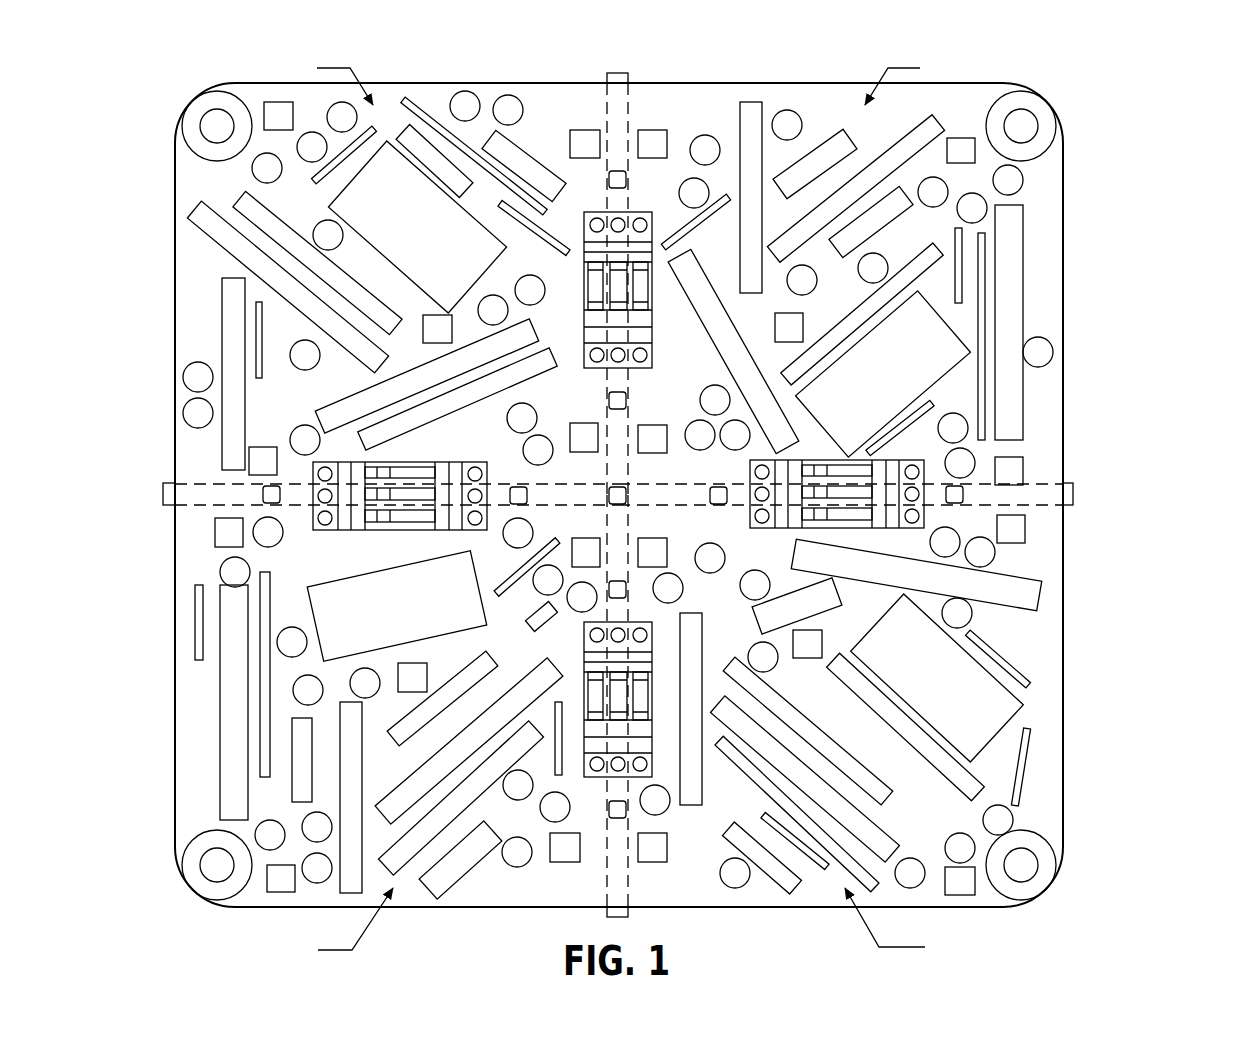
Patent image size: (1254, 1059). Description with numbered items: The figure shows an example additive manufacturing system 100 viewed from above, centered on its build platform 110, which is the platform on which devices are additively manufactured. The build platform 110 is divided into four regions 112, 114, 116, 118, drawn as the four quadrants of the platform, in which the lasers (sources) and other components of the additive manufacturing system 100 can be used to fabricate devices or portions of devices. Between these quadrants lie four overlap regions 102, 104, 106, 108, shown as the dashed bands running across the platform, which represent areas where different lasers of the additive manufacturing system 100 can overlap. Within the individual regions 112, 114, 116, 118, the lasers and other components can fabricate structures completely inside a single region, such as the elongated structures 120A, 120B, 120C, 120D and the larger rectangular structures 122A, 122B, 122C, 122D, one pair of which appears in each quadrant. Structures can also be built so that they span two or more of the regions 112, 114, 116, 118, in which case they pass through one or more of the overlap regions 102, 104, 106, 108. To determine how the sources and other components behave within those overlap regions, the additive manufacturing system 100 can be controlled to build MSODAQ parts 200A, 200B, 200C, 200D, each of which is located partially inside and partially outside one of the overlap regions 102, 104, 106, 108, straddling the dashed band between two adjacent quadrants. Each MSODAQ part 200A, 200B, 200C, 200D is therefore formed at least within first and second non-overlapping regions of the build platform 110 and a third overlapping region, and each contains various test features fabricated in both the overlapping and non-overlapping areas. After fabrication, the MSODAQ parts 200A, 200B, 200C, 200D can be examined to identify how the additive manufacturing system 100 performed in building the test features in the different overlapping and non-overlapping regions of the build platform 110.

The additive manufacturing system 100 is at (1181, 103).
The overlap region 102 is at (1052, 495).
The overlap region 104 is at (607, 92).
The overlap region 106 is at (163, 493).
The overlap region 108 is at (607, 898).
The build platform 110 is at (1067, 160).
The region 112 is at (1053, 777).
The region 114 is at (1053, 232).
The region 116 is at (180, 180).
The region 118 is at (180, 777).
The structure 120A is at (1040, 576).
The structure 120B is at (1028, 313).
The structure 120C is at (190, 237).
The structure 120D is at (220, 677).
The structure 122A is at (968, 694).
The structure 122B is at (940, 362).
The structure 122C is at (440, 237).
The structure 122D is at (392, 637).
The MSODAQ part 200A is at (824, 458).
The MSODAQ part 200B is at (583, 282).
The MSODAQ part 200C is at (408, 533).
The MSODAQ part 200D is at (583, 655).